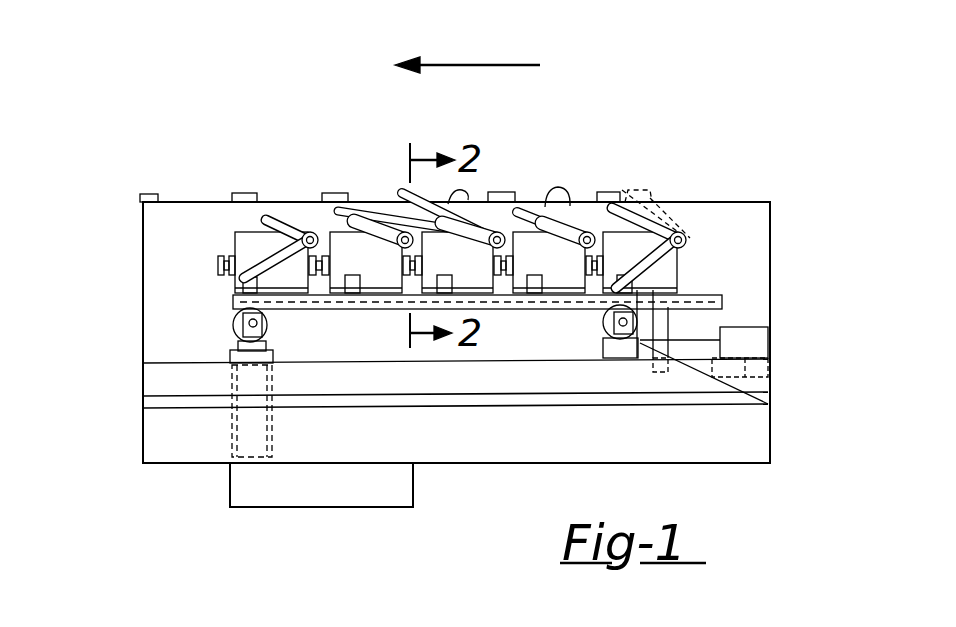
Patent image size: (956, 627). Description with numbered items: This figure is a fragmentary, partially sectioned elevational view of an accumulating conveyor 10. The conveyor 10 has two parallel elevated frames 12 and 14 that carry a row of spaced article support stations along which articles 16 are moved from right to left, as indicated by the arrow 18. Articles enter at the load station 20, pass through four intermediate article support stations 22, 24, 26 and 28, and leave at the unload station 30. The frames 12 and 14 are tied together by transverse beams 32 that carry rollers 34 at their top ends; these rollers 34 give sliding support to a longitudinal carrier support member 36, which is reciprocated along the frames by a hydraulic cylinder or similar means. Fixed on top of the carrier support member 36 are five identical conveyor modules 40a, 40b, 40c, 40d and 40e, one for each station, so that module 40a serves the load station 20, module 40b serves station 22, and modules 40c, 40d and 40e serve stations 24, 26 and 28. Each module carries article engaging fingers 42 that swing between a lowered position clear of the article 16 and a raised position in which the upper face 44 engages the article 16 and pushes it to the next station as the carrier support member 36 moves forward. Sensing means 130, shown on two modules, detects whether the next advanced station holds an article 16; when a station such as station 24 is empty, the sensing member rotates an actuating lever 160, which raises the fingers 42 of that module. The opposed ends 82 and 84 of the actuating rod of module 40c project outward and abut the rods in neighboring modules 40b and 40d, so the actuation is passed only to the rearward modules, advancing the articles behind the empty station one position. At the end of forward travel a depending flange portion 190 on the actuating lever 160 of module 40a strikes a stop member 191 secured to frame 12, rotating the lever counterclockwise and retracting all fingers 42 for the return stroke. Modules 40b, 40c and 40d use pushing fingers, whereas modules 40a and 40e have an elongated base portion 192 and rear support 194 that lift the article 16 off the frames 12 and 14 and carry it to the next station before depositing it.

The accumulating conveyor 10 is at (438, 507).
The article support frame 12 is at (737, 200).
The article support frame 14 is at (748, 356).
The article 16 is at (240, 193).
The arrow 18 is at (493, 65).
The load station 20 is at (636, 175).
The first intermediate article support station 22 is at (507, 157).
The intermediate article support station 24 is at (388, 182).
The intermediate article support station 26 is at (307, 193).
The intermediate article support station 28 is at (256, 178).
The unload station 30 is at (120, 207).
The transverse beam 32 is at (230, 352).
The roller 34 is at (233, 320).
The carrier support member 36 is at (280, 310).
The conveyor module 40a is at (668, 275).
The conveyor module 40b is at (584, 293).
The conveyor module 40c is at (493, 293).
The conveyor module 40d is at (398, 302).
The conveyor module 40e is at (285, 278).
The article engaging fingers 42 is at (347, 227).
The upper face 44 is at (548, 200).
The end of actuating rod 82 is at (403, 308).
The end of actuating rod 84 is at (490, 292).
The sensing means 130 is at (393, 196).
The actuating lever 160 is at (240, 288).
The depending flange portion 190 is at (610, 306).
The stop member 191 is at (580, 290).
The elongated base portion 192 is at (243, 247).
The rear support 194 is at (270, 233).